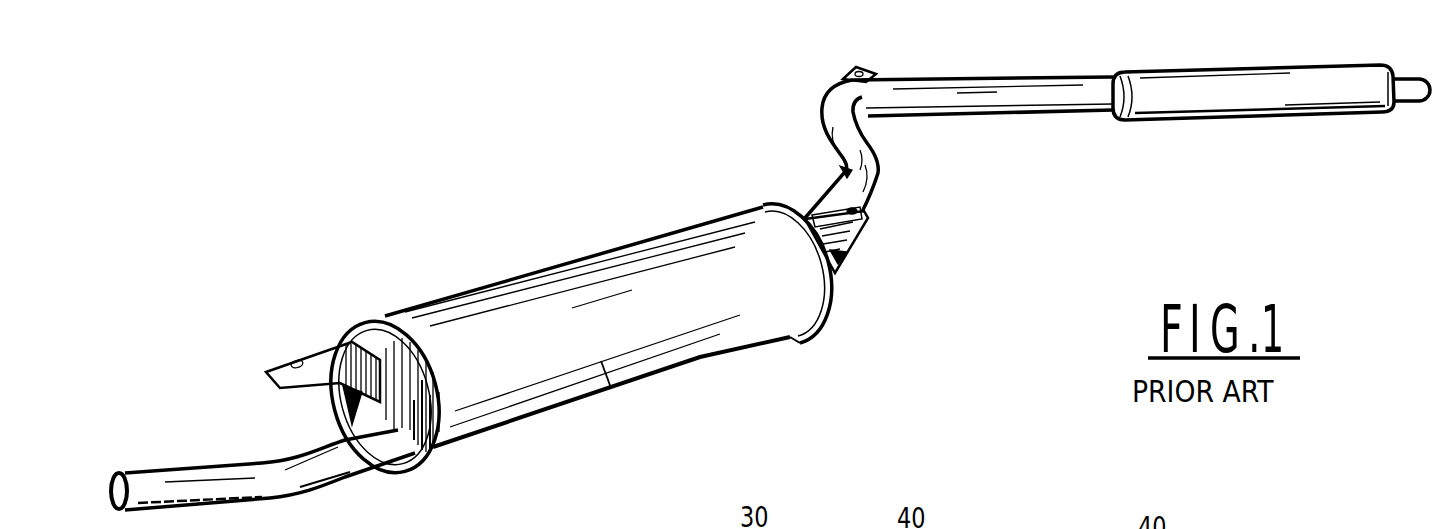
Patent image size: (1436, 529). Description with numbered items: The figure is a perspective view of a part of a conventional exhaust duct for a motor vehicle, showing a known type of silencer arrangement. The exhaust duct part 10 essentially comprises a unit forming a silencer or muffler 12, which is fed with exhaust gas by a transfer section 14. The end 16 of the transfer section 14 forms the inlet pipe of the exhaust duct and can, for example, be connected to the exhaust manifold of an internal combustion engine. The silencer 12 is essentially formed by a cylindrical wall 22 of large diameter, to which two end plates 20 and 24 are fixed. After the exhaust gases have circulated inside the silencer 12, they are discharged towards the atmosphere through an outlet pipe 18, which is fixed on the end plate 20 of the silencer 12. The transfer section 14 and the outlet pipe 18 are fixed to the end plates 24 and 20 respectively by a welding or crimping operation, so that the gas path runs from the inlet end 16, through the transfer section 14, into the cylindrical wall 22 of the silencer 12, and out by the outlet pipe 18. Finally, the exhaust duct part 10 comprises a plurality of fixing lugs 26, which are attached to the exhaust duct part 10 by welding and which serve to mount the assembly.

The exhaust duct part 10 is at (770, 275).
The silencer 12 is at (652, 280).
The transfer section 14 is at (1046, 130).
The end of the transfer section 16 is at (1414, 102).
The outlet pipe 18 is at (232, 483).
The end plate 20 is at (371, 338).
The cylindrical wall 22 is at (612, 390).
The end plate 24 is at (847, 255).
The fixing lugs 26 is at (272, 349).